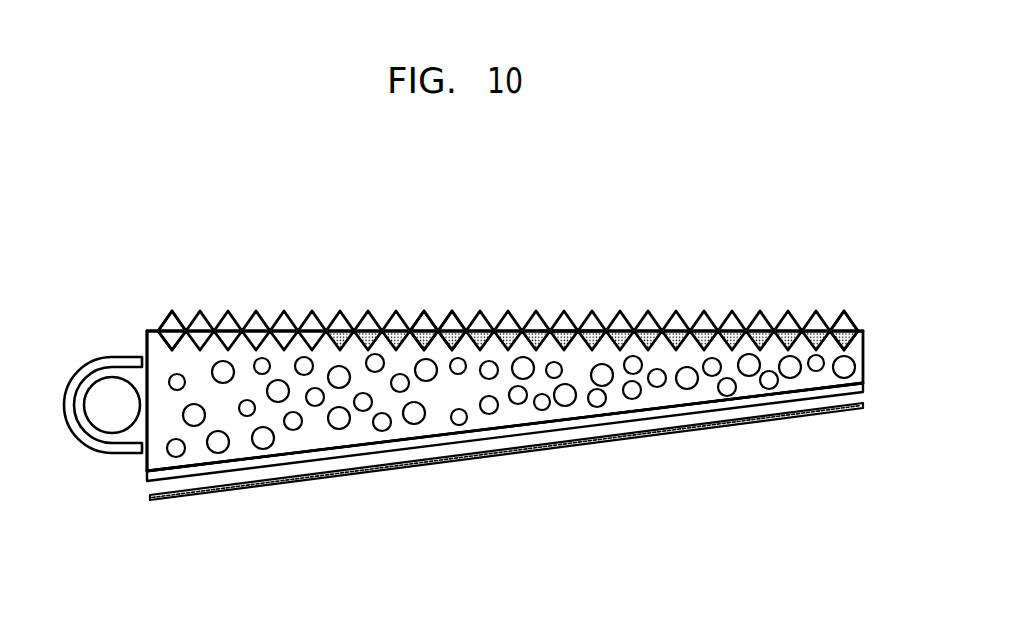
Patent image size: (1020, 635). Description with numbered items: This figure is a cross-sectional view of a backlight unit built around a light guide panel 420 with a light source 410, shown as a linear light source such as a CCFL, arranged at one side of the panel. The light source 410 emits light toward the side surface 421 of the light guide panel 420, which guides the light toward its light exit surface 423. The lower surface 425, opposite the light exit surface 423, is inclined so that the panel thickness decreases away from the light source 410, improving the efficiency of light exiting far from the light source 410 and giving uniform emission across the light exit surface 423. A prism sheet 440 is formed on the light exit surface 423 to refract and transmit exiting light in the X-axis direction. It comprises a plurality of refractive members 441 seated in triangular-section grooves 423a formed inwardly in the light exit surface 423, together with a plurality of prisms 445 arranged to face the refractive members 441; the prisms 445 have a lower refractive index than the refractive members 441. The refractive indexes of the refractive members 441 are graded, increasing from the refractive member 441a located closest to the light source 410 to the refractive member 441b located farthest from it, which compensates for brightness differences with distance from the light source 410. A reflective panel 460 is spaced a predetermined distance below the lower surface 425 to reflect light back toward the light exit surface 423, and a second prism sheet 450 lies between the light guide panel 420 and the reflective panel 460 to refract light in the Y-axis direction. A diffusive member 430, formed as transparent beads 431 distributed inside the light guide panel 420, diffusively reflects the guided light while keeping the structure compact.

The light source 410 is at (101, 443).
The light guide panel 420 is at (138, 478).
The side surface 421 is at (140, 466).
The light exit surface 423 is at (152, 330).
The groove 423a is at (566, 325).
The lower surface 425 is at (636, 414).
The diffusive member 430 is at (255, 461).
The beads 431 is at (265, 449).
The prism sheet 440 is at (277, 310).
The refractive members 441 is at (467, 324).
The refractive member located closest to the light source 441a is at (185, 318).
The refractive member located farthest from the light source 441b is at (843, 330).
The prisms 445 is at (428, 325).
The second prism sheet 450 is at (562, 430).
The reflective panel 460 is at (747, 422).